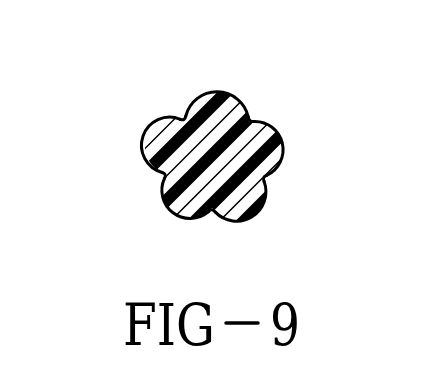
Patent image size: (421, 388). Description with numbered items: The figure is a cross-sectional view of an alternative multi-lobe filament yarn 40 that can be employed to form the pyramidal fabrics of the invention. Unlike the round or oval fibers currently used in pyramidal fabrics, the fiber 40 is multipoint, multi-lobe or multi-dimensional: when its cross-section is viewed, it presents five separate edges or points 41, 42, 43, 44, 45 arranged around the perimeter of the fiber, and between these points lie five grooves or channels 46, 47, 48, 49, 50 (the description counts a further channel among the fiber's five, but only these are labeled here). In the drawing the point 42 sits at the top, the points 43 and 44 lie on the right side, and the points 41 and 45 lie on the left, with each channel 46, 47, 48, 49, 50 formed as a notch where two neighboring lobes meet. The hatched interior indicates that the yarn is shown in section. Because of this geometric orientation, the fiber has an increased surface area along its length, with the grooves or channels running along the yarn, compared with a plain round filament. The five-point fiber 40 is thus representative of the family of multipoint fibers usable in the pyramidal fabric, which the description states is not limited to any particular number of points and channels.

The filament yarn 40 is at (141, 152).
The edge or point 41 is at (153, 128).
The edge or point 42 is at (214, 92).
The edge or point 43 is at (277, 125).
The edge or point 44 is at (252, 218).
The edge or point 45 is at (177, 220).
The channel 46 is at (184, 120).
The channel 47 is at (249, 122).
The channel 48 is at (263, 177).
The channel 49 is at (215, 209).
The channel 50 is at (167, 176).